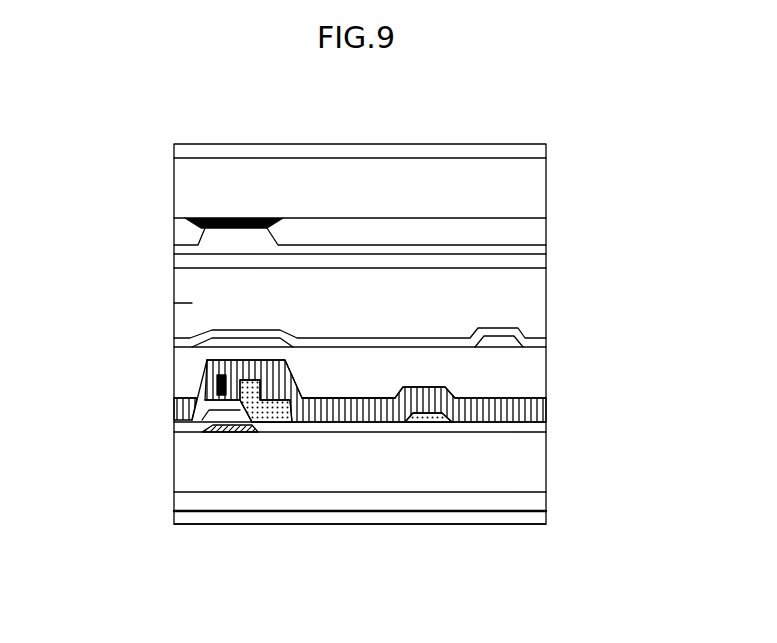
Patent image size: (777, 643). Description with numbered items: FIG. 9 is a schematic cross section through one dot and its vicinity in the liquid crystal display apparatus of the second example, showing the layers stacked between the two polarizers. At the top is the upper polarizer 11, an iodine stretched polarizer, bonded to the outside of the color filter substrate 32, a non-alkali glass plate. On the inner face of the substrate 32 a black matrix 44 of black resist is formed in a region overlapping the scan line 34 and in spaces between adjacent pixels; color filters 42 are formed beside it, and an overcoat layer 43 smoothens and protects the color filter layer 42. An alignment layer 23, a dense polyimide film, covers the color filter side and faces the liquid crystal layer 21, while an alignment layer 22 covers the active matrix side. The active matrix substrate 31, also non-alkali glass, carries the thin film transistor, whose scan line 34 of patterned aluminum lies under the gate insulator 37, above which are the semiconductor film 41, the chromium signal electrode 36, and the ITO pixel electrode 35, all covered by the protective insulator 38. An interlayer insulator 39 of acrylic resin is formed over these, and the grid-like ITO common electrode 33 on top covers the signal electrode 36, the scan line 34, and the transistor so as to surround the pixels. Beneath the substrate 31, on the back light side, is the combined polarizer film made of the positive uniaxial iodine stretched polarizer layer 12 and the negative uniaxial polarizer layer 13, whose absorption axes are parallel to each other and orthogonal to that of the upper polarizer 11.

The upper polarizer 11 is at (360, 131).
The substrate 32 is at (360, 155).
The color filter 42 is at (415, 205).
The overcoat layer 43 is at (296, 216).
The black matrix 44 is at (187, 179).
The alignment layer 23 is at (291, 258).
The insulating film 21 is at (299, 321).
The alignment layer 22 is at (414, 297).
The common electrode 33 is at (410, 314).
The interlayer insulator 39 is at (473, 370).
The signal electrode 36 is at (303, 391).
The protective insulator 38 is at (410, 404).
The semiconductor film 41 is at (153, 430).
The pixel electrode 35 is at (358, 474).
The gate insulator 37 is at (394, 453).
The scan line 34 is at (171, 483).
The substrate 31 is at (360, 514).
The polarizer layer 13 is at (360, 531).
The polarizer layer 12 is at (360, 552).